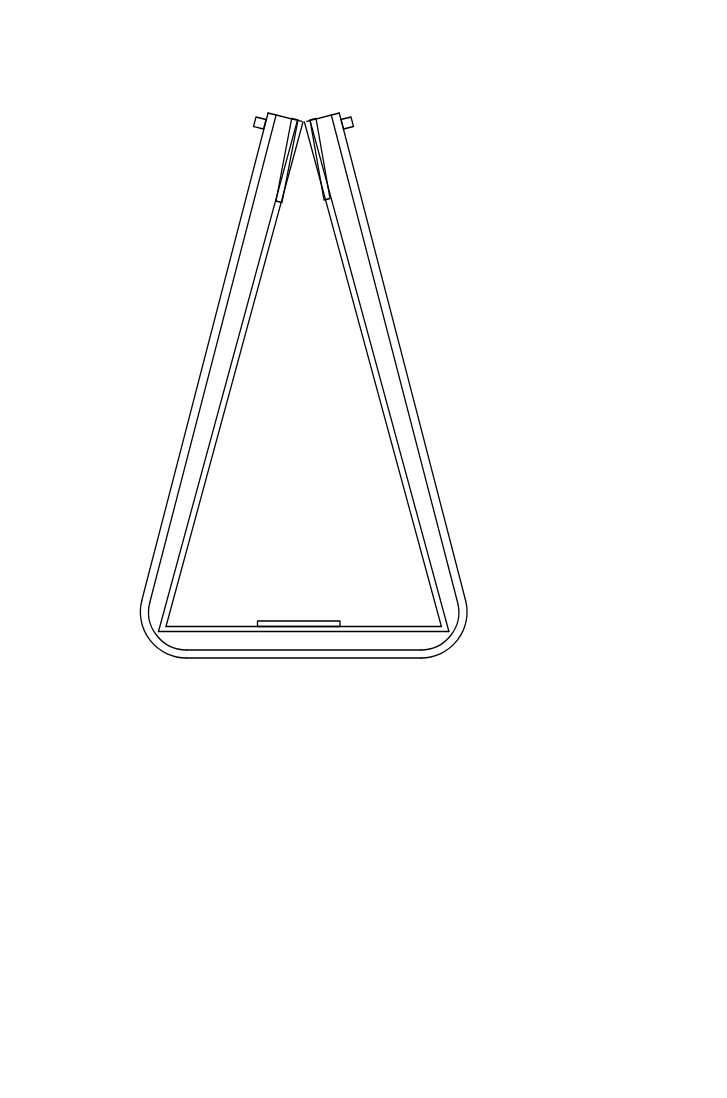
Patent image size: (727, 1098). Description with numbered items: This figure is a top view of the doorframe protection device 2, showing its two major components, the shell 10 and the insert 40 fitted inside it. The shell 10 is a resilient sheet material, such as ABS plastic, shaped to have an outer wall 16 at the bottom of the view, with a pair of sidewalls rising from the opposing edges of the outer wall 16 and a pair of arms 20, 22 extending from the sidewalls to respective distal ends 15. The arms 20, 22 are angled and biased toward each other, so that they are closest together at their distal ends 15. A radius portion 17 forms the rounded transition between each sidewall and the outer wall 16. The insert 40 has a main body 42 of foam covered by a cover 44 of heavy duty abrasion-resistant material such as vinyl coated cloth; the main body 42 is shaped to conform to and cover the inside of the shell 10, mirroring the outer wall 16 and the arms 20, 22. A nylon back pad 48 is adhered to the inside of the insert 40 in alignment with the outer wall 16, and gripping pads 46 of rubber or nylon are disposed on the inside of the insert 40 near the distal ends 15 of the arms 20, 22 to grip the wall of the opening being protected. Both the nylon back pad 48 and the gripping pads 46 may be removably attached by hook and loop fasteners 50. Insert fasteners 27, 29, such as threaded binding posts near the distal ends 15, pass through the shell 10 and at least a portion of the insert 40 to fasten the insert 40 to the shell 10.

The doorframe protection device 2 is at (222, 661).
The shell 10 is at (310, 677).
The distal end 15 is at (308, 113).
The outer wall 16 is at (343, 660).
The radius portion 17 is at (143, 638).
The arm 20 is at (392, 313).
The arm 22 is at (232, 256).
The insert fastener 27 is at (352, 121).
The insert fastener 29 is at (260, 117).
The insert 40 is at (326, 100).
The main body 42 is at (226, 341).
The cover 44 is at (211, 417).
The gripping pad 46 is at (311, 153).
The nylon back pad 48 is at (270, 619).
The hook and loop fasteners 50 is at (342, 625).